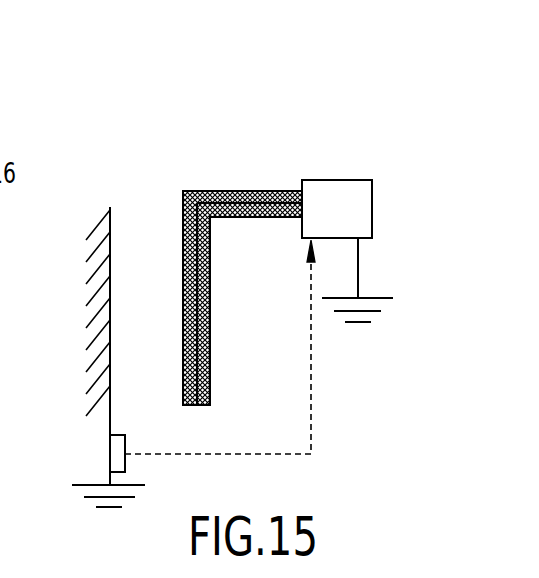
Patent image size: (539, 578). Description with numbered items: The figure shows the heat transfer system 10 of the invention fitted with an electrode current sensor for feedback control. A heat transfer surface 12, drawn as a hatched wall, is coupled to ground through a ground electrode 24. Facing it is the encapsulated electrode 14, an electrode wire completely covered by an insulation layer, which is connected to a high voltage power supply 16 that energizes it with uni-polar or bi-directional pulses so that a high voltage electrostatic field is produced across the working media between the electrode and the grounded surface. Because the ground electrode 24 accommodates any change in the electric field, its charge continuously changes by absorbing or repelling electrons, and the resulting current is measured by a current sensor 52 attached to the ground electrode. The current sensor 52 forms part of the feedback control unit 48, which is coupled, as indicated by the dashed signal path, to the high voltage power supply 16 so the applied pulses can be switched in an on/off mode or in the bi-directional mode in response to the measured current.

The heat transfer system 10 is at (304, 130).
The heat transfer surface 12 is at (110, 208).
The encapsulated electrode 14 is at (212, 273).
The high voltage power supply 16 is at (358, 201).
The ground electrode 24 is at (108, 481).
The feedback control unit 48 is at (330, 443).
The current sensor 52 is at (117, 435).